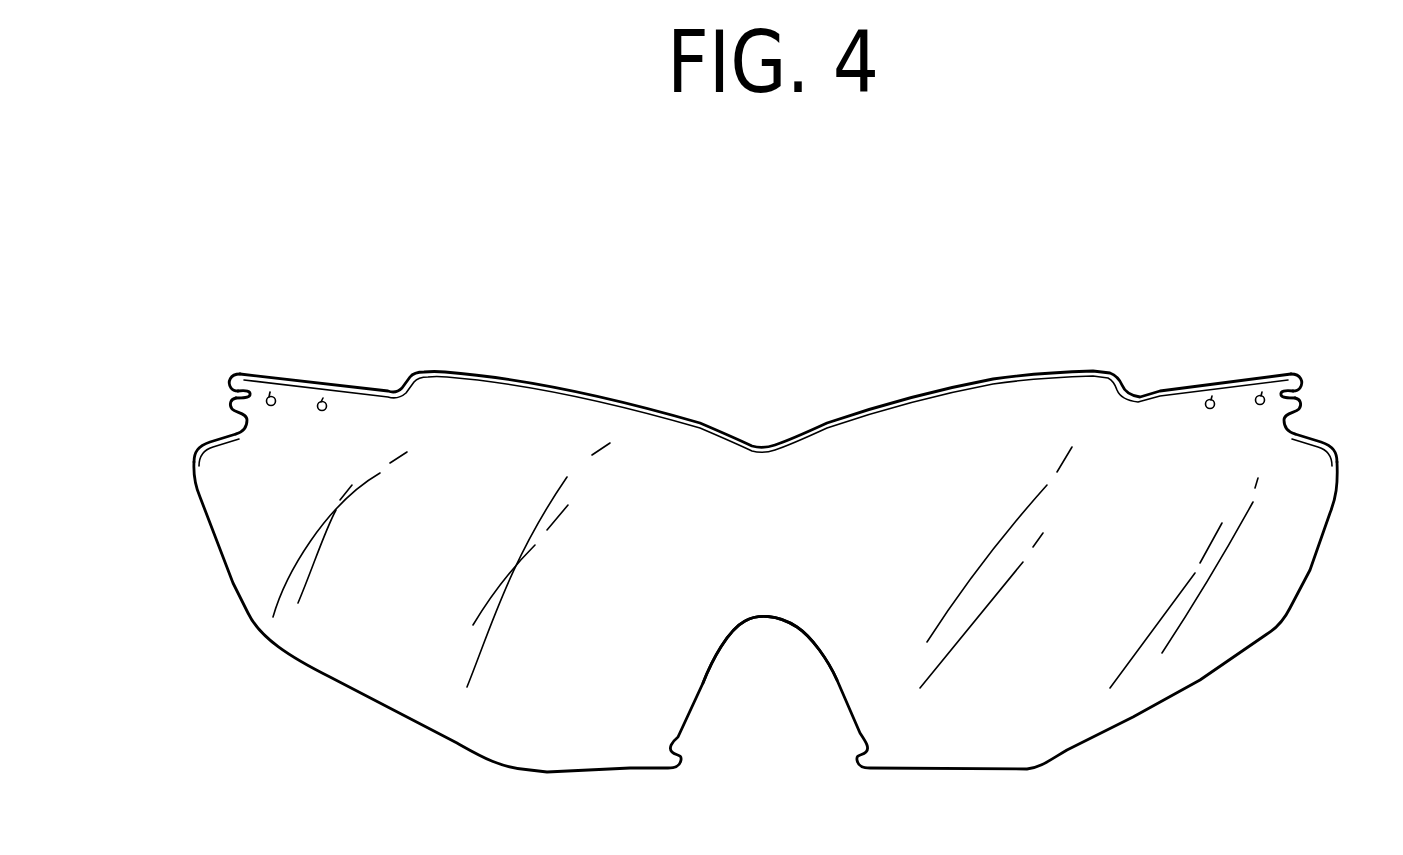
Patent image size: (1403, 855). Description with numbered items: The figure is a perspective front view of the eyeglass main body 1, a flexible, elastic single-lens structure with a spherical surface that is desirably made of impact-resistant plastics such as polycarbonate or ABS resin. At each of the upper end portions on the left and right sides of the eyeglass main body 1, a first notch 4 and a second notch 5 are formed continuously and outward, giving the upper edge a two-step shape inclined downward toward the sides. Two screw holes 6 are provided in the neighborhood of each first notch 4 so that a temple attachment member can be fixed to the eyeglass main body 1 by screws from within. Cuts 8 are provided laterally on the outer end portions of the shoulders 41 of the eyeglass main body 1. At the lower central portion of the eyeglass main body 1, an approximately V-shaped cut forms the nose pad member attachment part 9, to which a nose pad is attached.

The eyeglass main body 1 is at (723, 463).
The first notch 4 is at (373, 377).
The shoulders 41 is at (253, 370).
The second notch 5 is at (213, 423).
The screw holes 6 is at (270, 392).
The cuts 8 is at (230, 390).
The nose pad member attachment part 9 is at (800, 628).